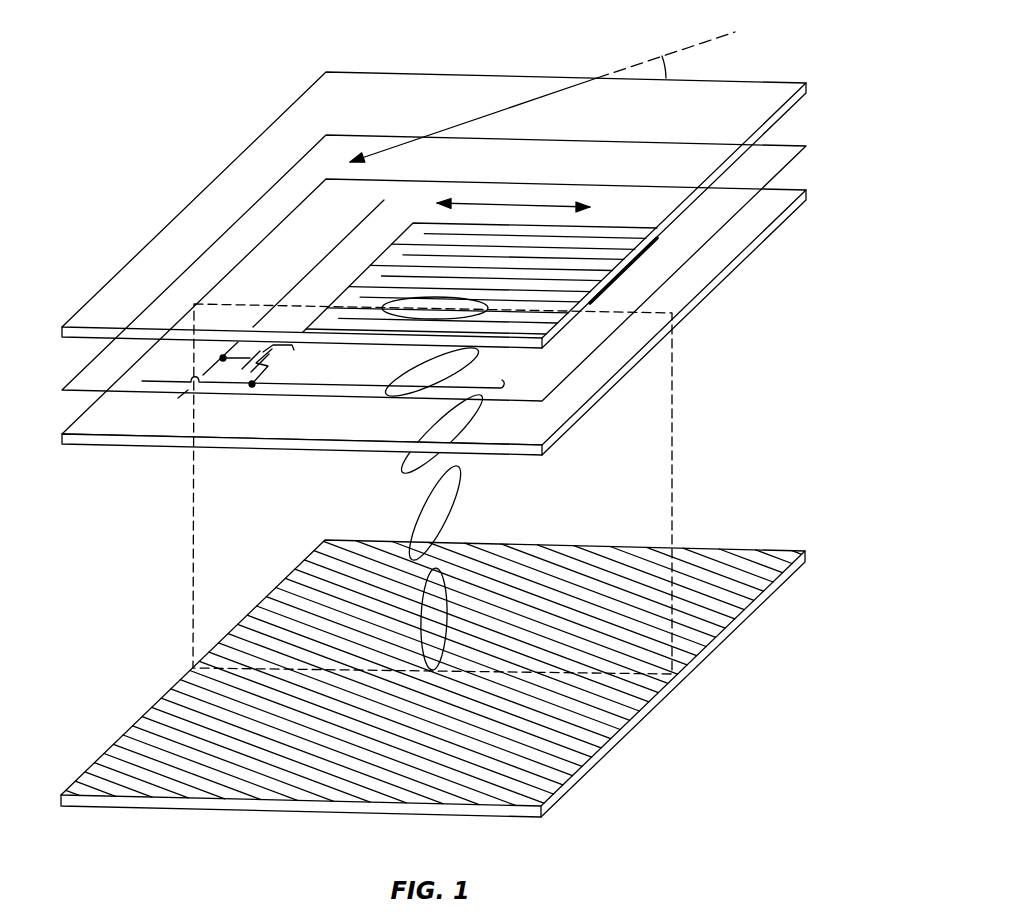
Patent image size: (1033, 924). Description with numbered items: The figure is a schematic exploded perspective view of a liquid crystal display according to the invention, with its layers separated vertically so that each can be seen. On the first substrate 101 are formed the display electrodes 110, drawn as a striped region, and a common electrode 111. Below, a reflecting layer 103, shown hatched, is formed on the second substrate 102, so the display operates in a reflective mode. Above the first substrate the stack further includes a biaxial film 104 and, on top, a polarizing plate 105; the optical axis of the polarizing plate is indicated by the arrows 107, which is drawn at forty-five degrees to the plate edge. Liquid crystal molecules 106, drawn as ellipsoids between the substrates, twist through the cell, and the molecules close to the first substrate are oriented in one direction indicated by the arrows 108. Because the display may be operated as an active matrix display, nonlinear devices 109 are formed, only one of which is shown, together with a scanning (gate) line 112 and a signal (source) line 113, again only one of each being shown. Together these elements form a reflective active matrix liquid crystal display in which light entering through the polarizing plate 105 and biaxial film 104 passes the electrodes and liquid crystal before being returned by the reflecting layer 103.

The first substrate 101 is at (440, 317).
The second substrate 102 is at (433, 691).
The reflecting layer 103 is at (415, 758).
The biaxial film 104 is at (412, 275).
The polarizing plate 105 is at (434, 194).
The liquid crystal molecules 106 is at (466, 483).
The arrows indicating the optical axis of the polarizing plate 107 is at (542, 97).
The arrows indicating orientation direction 108 is at (520, 185).
The nonlinear devices 109 is at (271, 364).
The display electrodes 110 is at (478, 269).
The common electrode 111 is at (675, 285).
The scanning (gate) lines 112 is at (317, 263).
The signal (source) lines 113 is at (323, 401).